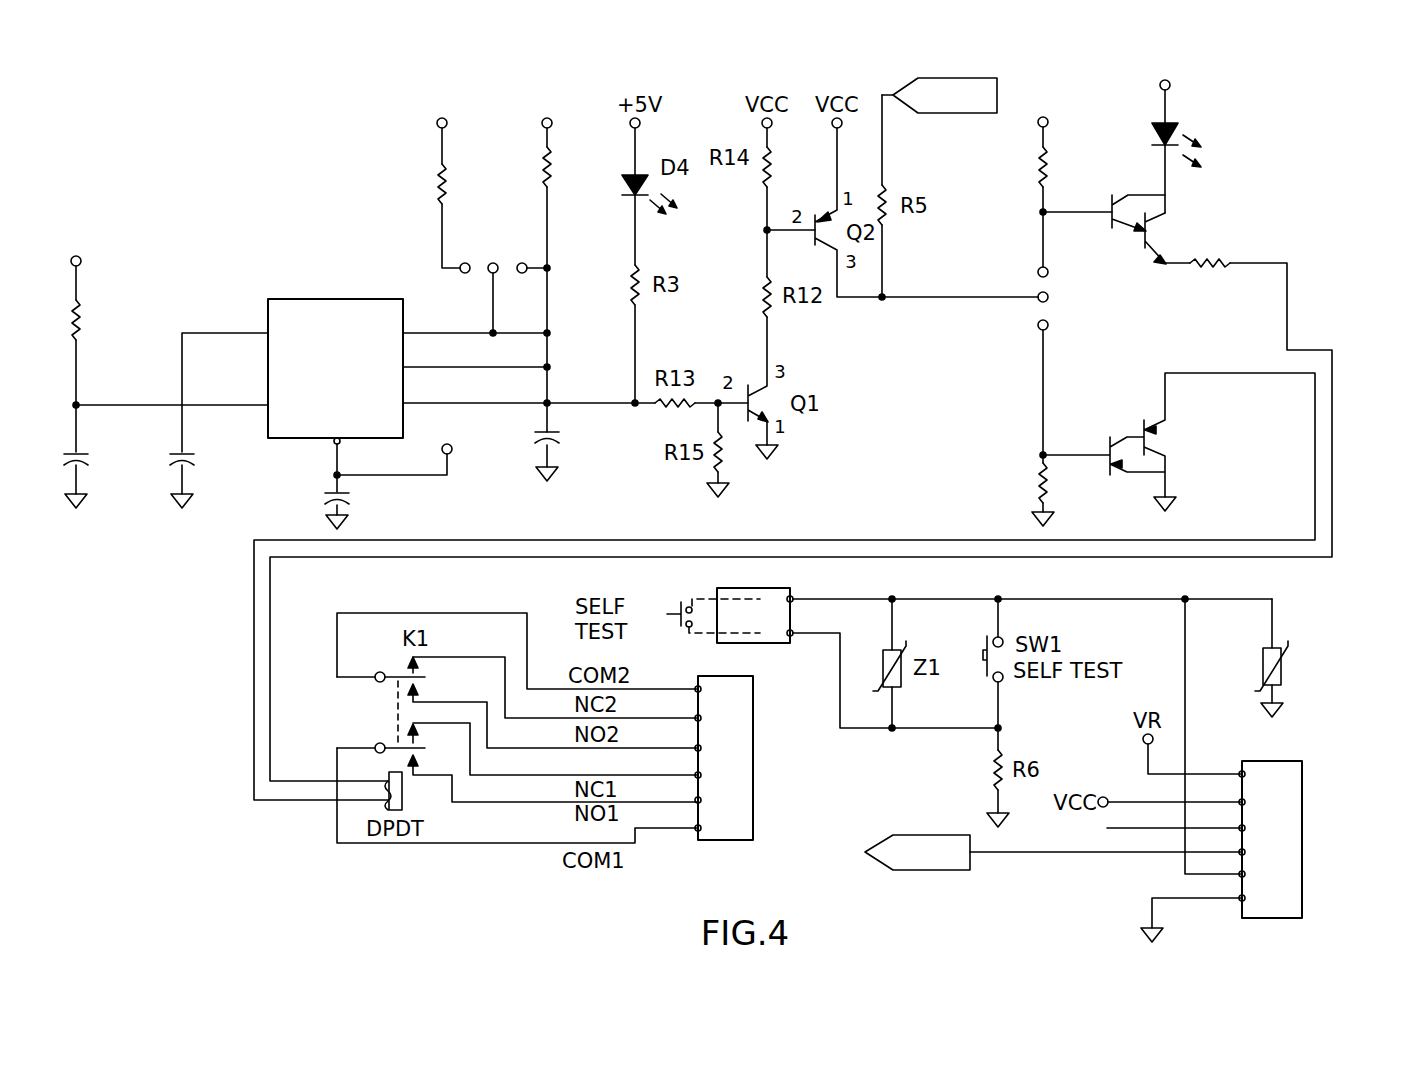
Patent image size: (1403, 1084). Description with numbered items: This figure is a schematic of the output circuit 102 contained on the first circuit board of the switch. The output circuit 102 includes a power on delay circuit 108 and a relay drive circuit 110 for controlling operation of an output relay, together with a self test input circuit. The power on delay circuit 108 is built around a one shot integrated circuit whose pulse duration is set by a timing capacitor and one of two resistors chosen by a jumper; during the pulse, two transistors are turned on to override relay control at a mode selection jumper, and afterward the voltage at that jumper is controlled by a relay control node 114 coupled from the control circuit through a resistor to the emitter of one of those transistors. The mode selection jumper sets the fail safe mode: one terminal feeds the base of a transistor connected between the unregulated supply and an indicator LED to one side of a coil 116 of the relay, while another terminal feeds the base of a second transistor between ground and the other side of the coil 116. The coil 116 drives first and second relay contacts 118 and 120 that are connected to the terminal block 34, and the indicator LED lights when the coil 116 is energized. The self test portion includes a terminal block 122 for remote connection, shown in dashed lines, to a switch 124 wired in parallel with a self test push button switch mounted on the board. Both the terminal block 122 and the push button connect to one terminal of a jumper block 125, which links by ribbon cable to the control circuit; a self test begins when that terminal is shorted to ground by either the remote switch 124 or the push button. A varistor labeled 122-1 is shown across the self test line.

The power on delay circuit 108 is at (305, 192).
The relay control node 114 is at (997, 80).
The relay drive circuit 110 is at (1332, 165).
The output circuit 102 is at (1325, 315).
The switch 124 is at (683, 604).
The terminal block 122 is at (785, 597).
The varistor Z2 122-1 is at (1310, 637).
The second relay contact 120 is at (393, 675).
The first relay contact 118 is at (393, 745).
The coil 116 is at (388, 806).
The terminal block 34 is at (737, 768).
The jumper block 125 is at (1292, 797).